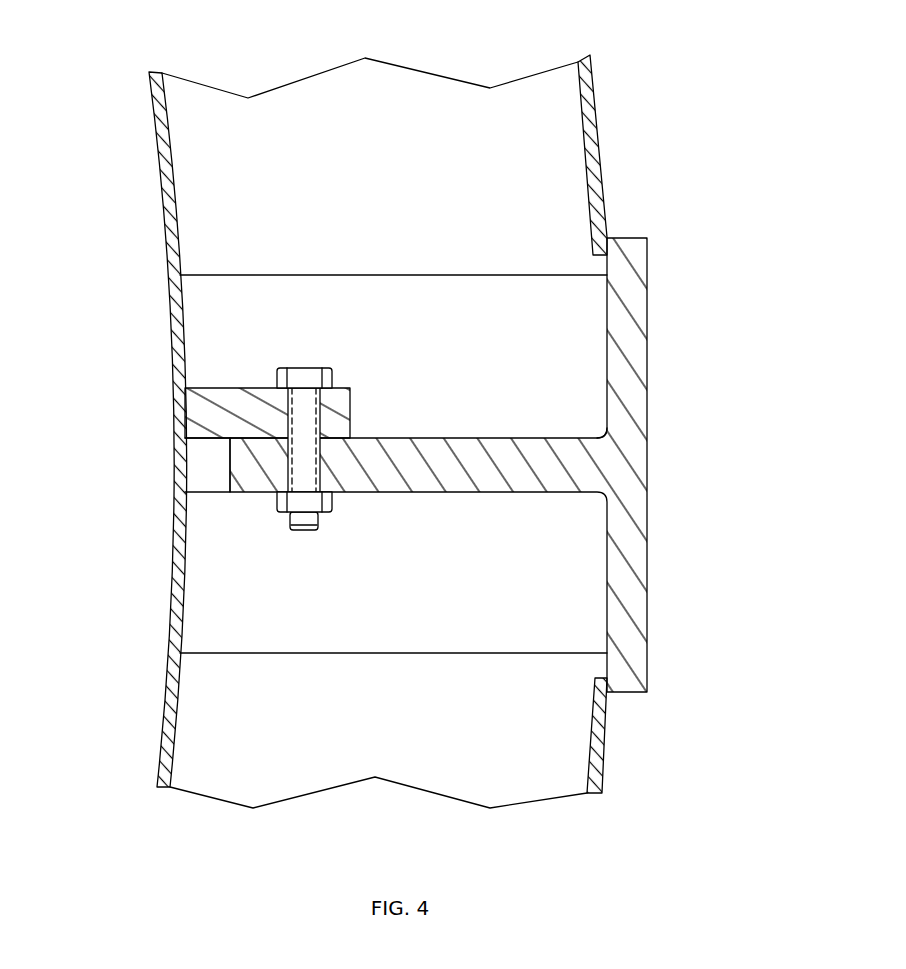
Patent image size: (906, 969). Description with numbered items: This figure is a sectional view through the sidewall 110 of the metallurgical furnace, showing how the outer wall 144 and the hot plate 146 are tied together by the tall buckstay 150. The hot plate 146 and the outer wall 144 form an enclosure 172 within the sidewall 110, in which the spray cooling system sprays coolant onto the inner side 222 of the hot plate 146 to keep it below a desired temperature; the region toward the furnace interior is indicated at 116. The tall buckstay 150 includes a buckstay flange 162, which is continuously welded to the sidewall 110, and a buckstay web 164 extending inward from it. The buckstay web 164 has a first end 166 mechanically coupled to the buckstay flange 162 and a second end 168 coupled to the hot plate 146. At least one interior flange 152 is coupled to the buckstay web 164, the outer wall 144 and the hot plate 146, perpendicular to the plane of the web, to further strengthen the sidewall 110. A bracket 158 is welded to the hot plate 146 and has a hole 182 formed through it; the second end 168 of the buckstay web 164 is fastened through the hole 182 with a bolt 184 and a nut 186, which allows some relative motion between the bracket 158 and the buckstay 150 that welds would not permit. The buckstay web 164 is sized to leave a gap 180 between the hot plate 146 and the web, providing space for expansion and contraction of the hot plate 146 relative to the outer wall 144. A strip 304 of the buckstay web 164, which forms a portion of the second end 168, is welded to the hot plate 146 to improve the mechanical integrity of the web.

The sidewall 110 is at (664, 83).
The interior 116 is at (78, 380).
The outer wall 144 is at (595, 170).
The hot plate 146 is at (166, 429).
The tall buckstay 150 is at (676, 462).
The interior flange 152 is at (489, 273).
The bracket 158 is at (229, 398).
The buckstay flange 162 is at (482, 465).
The buckstay web 164 is at (446, 490).
The first end 166 is at (597, 432).
The second end 168 is at (228, 458).
The enclosure 172 is at (397, 139).
The gap 180 is at (210, 488).
The hole 182 is at (322, 424).
The bolt 184 is at (328, 378).
The nut 186 is at (335, 508).
The inner side 222 is at (165, 153).
The strip 304 is at (190, 494).